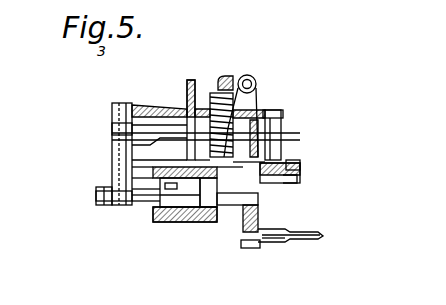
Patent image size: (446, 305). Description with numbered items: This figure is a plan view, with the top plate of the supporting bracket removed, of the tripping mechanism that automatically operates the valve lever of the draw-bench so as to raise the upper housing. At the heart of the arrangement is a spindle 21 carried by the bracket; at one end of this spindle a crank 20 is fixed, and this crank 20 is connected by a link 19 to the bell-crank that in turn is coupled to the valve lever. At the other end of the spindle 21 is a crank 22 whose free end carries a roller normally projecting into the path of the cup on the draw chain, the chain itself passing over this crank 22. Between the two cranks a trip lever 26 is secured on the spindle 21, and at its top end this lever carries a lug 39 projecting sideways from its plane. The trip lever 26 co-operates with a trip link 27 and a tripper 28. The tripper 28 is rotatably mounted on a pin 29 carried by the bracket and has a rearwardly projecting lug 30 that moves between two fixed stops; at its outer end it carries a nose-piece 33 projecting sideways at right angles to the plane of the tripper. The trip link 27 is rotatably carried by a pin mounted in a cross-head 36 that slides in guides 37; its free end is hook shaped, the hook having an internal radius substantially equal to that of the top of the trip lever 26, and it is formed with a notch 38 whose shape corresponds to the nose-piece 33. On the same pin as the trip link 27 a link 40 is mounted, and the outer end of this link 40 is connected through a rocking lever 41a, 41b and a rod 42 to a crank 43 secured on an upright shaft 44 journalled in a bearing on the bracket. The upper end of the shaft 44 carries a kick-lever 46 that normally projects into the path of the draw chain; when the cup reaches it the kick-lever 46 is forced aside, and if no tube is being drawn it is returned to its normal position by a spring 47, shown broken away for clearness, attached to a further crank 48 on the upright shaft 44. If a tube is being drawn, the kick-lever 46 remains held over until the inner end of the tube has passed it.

The link 19 is at (320, 236).
The crank 20 is at (277, 239).
The spindle 21 is at (255, 243).
The crank 22 is at (278, 124).
The trip lever 26 is at (217, 222).
The trip link 27 is at (173, 222).
The tripper 28 is at (286, 152).
The pin 29 is at (300, 163).
The lug 30 is at (297, 181).
The nose-piece 33 is at (258, 199).
The cross-head 36 is at (152, 205).
The guides 37 is at (135, 200).
The notch 38 is at (244, 232).
The lug 39 is at (195, 222).
The link 40 is at (105, 205).
The rocking lever 41a is at (110, 188).
The rocking lever 41b is at (110, 130).
The rod 42 is at (112, 148).
The crank 43 is at (256, 128).
The upright shaft 44 is at (250, 77).
The kick-lever 46 is at (183, 150).
The spring 47 is at (215, 120).
The crank 48 is at (229, 78).